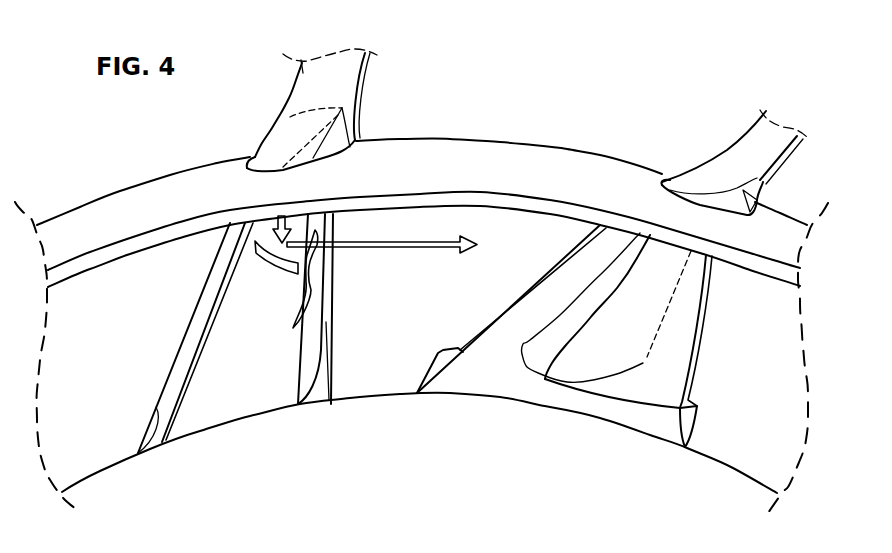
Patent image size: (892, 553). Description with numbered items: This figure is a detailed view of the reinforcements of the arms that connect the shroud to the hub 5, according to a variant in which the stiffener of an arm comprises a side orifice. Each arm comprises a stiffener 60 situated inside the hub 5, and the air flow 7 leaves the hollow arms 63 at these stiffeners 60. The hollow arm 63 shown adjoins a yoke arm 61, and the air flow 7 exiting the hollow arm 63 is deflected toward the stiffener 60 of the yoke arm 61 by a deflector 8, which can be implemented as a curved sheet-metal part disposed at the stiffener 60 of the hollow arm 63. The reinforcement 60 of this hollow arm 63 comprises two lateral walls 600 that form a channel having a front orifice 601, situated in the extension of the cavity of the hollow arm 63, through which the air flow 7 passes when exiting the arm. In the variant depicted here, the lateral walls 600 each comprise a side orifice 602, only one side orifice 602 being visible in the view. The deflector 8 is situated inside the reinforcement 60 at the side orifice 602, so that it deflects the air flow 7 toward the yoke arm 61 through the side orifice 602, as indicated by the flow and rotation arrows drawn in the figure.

The hub 5 is at (518, 161).
The air flow 7 is at (277, 222).
The deflector 8 is at (262, 268).
The stiffener 60 is at (338, 292).
The yoke arm 61 is at (757, 151).
The hollow arm 63 is at (313, 87).
The lateral wall 600 is at (208, 327).
The front orifice 601 is at (244, 394).
The side orifice 602 is at (302, 318).